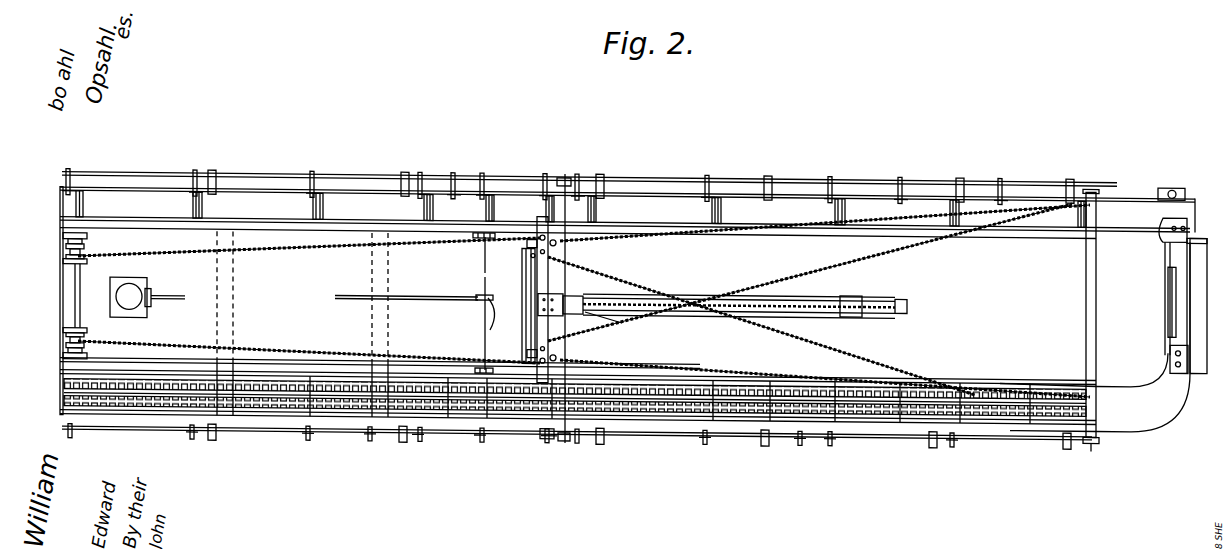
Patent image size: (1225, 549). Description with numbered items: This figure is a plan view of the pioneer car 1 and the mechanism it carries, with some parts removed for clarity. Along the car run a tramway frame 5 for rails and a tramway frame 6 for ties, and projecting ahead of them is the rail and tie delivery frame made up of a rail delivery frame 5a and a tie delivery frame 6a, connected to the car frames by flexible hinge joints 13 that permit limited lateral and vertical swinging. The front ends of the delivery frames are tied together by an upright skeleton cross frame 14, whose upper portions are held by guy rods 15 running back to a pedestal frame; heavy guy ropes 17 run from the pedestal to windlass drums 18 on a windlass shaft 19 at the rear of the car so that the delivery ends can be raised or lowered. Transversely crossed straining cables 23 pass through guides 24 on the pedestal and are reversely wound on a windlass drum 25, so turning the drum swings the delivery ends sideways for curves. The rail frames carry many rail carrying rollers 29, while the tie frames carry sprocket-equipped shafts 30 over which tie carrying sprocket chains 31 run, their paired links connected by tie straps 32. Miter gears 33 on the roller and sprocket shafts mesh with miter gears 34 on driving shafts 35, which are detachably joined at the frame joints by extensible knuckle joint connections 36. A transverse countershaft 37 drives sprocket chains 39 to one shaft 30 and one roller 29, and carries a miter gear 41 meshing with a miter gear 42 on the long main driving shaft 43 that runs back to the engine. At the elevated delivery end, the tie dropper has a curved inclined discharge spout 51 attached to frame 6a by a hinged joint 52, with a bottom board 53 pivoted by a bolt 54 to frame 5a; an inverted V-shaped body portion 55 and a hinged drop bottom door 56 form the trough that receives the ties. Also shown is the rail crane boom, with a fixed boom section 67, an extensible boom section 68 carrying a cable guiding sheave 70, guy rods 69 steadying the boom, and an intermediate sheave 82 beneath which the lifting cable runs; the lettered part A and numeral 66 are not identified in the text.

The pioneer car 1 is at (194, 301).
The tramway frame for rails 5 is at (270, 190).
The rail delivery tramway frame 5a is at (1000, 198).
The tramway frame for ties 6 is at (265, 415).
The tie delivery tramway frame 6a is at (880, 416).
The flexible hinge joint 13 is at (560, 184).
The upright skeleton cross frame 14 is at (1086, 336).
The guy rod 15 is at (712, 233).
The guy rope 17 is at (270, 258).
The windlass drum 18 is at (64, 249).
The windlass shaft 19 is at (74, 299).
The straining cable 23 is at (925, 252).
The guide 24 is at (556, 250).
The windlass drum 25 is at (522, 280).
The rail carrying roller 29 is at (318, 205).
The sprocket-equipped shaft 30 is at (312, 395).
The tie carrying sprocket chain 31 is at (465, 408).
The tie strap 32 is at (145, 393).
The miter gear 33 is at (312, 182).
The miter gear 34 is at (199, 178).
The driving shaft 35 is at (455, 178).
The knuckle joint connection 36 is at (572, 180).
The transverse countershaft 37 is at (483, 268).
The sprocket chain 39 is at (482, 228).
The miter gear 41 is at (490, 305).
The miter gear 42 is at (476, 300).
The main driving shaft 43 is at (170, 300).
The inclined discharge spout 51 is at (1145, 420).
The hinged joint 52 is at (1092, 444).
The bottom board 53 is at (1165, 222).
The bolt 54 is at (1170, 188).
The inverted V-shaped body portion 55 is at (1170, 290).
The drop bottom door 56 is at (1170, 339).
The cable 66 is at (605, 318).
The boom section 67 is at (840, 297).
The extensible boom section 68 is at (880, 297).
The guy rod 69 is at (680, 300).
The cable guiding sheave 70 is at (910, 305).
The intermediate sheave 82 is at (585, 296).
The motor A is at (132, 296).